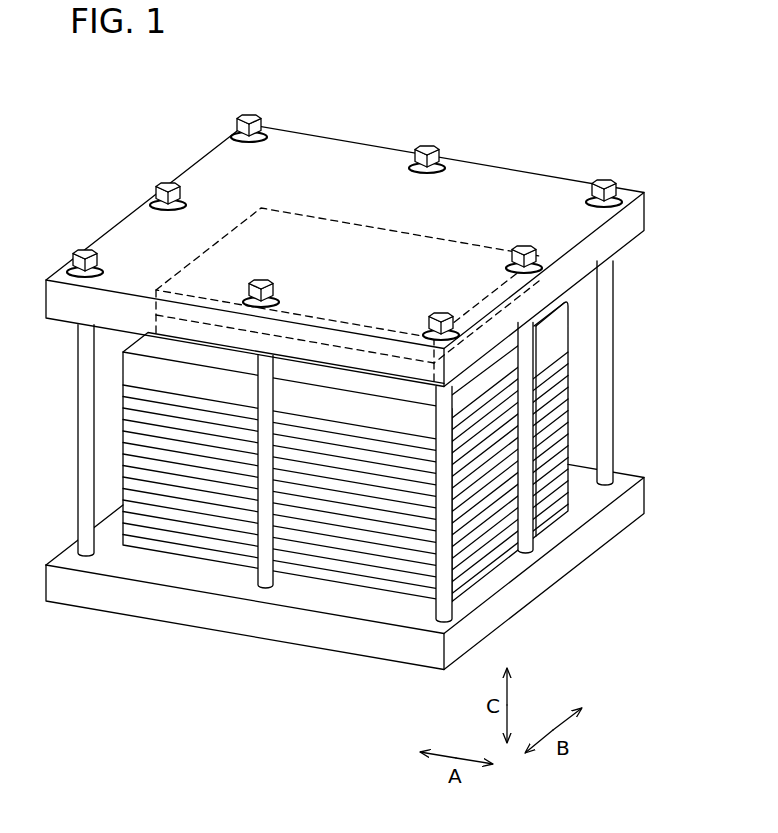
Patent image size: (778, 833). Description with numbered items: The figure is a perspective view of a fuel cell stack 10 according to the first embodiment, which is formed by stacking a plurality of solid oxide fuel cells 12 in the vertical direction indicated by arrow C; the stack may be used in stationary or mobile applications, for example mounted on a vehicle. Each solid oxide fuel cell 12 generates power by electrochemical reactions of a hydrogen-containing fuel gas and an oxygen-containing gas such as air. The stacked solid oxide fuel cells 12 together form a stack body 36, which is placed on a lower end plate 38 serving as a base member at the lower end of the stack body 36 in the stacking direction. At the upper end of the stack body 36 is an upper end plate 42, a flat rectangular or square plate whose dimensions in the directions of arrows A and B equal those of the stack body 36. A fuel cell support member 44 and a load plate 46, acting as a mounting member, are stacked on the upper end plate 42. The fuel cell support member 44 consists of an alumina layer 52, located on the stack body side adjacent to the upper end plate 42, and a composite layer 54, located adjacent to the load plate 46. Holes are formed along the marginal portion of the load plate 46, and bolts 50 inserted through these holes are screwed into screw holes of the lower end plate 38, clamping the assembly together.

The fuel cell stack 10 is at (406, 74).
The solid oxide fuel cell 12 is at (125, 460).
The stack body 36 is at (572, 395).
The lower end plate 38 is at (566, 583).
The upper end plate 42 is at (555, 325).
The fuel cell support member 44 is at (200, 246).
The load plate 46 is at (553, 172).
The bolt 50 is at (82, 383).
The alumina layer 52 is at (325, 352).
The composite layer 54 is at (401, 367).